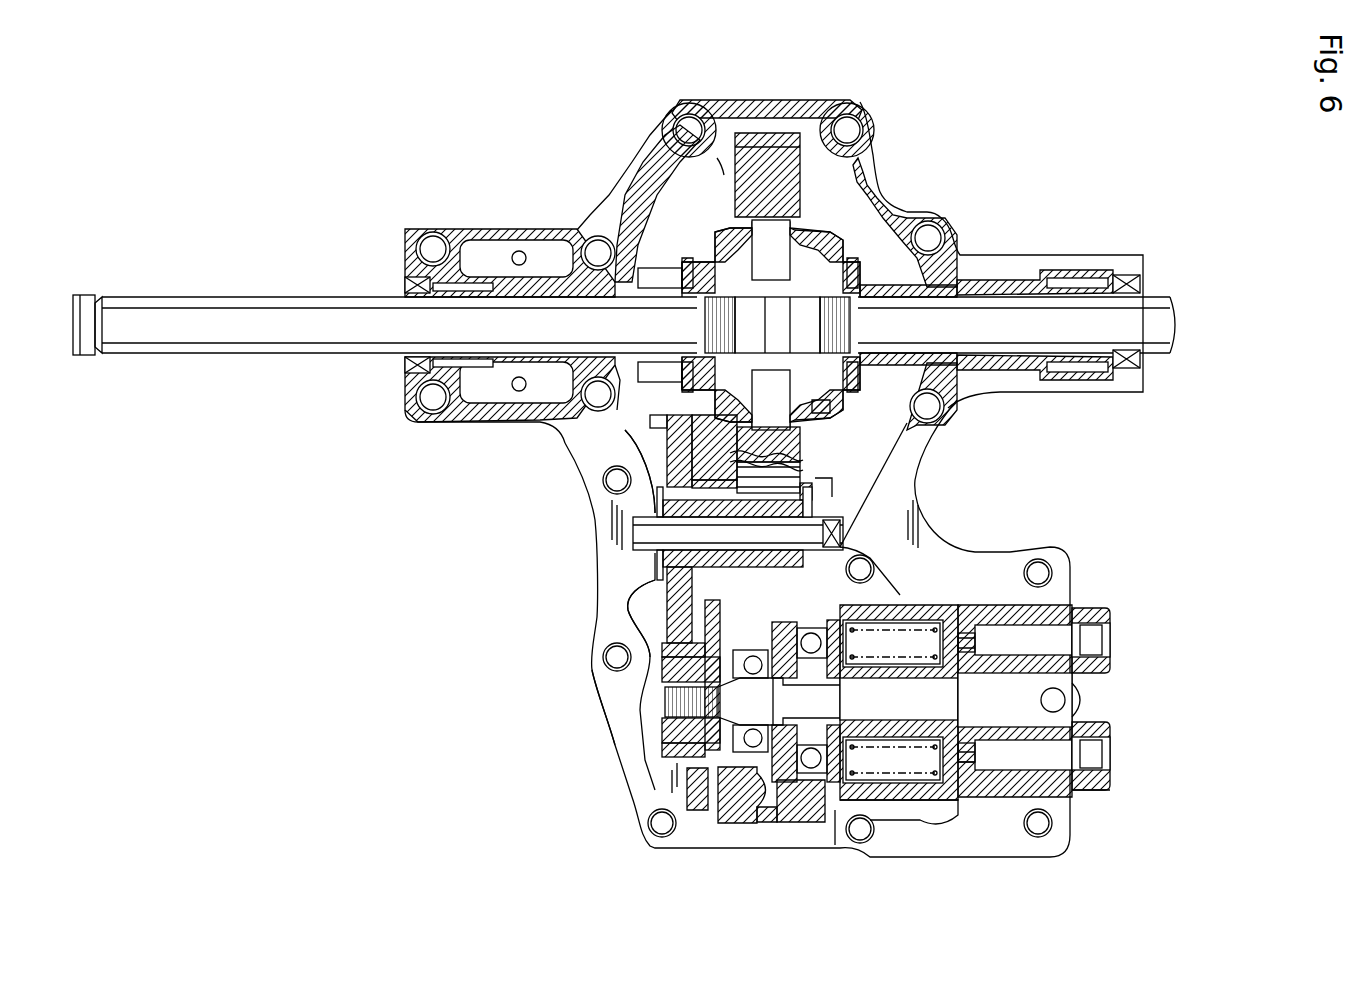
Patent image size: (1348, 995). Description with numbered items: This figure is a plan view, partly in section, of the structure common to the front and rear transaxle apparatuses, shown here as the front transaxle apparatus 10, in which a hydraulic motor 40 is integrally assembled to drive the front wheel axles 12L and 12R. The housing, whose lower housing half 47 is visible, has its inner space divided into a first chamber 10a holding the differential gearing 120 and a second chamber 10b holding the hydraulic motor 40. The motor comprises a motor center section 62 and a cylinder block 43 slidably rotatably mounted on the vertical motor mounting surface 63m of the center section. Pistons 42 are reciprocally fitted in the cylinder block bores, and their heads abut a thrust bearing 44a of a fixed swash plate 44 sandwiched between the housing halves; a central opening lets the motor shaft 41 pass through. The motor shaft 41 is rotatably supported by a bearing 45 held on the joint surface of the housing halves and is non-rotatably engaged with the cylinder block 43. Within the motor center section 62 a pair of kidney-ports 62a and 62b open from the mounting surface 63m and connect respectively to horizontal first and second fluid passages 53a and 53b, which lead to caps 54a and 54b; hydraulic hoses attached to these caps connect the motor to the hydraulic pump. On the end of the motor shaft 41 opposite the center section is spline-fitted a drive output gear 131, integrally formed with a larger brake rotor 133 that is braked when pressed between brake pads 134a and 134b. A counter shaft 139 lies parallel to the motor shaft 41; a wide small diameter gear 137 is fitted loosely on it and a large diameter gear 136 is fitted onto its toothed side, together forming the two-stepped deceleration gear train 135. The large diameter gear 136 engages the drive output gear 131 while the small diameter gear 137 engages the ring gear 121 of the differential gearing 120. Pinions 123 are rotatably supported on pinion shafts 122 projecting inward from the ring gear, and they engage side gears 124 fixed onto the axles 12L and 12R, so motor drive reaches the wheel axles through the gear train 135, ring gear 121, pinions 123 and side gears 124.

The front transaxle apparatus 10 is at (497, 636).
The first chamber 10a is at (655, 450).
The second chamber 10b is at (655, 622).
The front wheel axle 12L is at (262, 350).
The front wheel axle 12R is at (1160, 350).
The hydraulic motor 40 is at (925, 535).
The motor shaft 41 is at (658, 697).
The pistons 42 is at (828, 685).
The cylinder block 43 is at (870, 820).
The fixed swash plate 44 is at (808, 633).
The thrust bearing 44a is at (828, 640).
The bearing 45 is at (752, 650).
The lower housing half 47 is at (597, 685).
The first fluid passage 53a is at (1003, 795).
The second fluid passage 53b is at (1000, 600).
The cap 54a is at (1088, 792).
The cap 54b is at (1085, 680).
The motor center section 62 is at (965, 800).
The kidney-port 62a is at (888, 788).
The kidney-port 62b is at (893, 620).
The motor mounting surface 63m is at (958, 620).
The differential gearing 120 is at (857, 235).
The ring gear 121 is at (800, 462).
The pinion shafts 122 is at (773, 228).
The pinions 123 is at (735, 235).
The side gears 124 is at (705, 240).
The drive output gear 131 is at (668, 755).
The brake rotor 133 is at (742, 823).
The brake pad 134a is at (692, 815).
The brake pad 134b is at (760, 822).
The deceleration gear train 135 is at (812, 503).
The large diameter gear 136 is at (676, 414).
The small diameter gear 137 is at (718, 485).
The counter shaft 139 is at (633, 548).